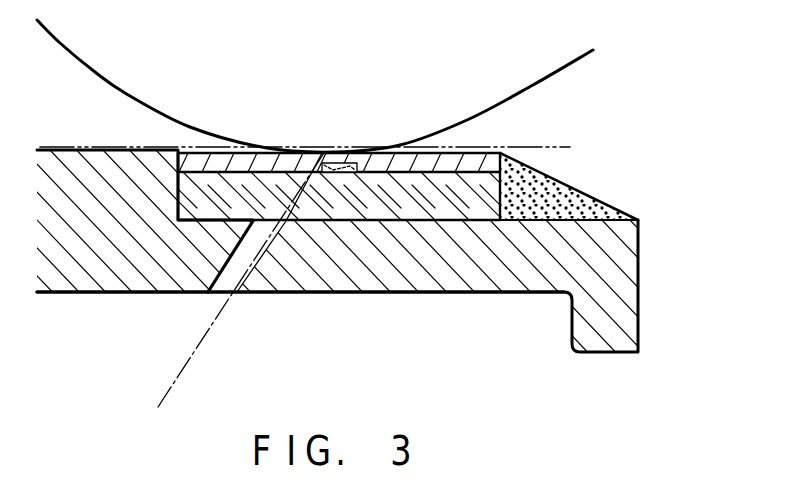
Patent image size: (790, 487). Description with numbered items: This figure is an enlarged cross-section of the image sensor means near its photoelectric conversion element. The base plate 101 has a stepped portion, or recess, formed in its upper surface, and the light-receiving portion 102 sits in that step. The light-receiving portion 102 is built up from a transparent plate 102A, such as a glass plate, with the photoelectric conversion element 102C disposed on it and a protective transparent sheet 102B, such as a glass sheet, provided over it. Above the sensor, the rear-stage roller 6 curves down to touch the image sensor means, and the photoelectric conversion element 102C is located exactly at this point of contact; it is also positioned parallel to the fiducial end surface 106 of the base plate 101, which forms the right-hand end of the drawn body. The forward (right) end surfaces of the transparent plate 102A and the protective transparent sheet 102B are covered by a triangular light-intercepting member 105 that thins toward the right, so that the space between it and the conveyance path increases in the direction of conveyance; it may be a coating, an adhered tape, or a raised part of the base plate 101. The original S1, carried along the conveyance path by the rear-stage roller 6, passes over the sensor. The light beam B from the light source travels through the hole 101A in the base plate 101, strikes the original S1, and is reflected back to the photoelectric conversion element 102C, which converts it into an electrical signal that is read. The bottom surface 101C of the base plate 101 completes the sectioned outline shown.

The rear-stage roller 6 is at (523, 72).
The original S1 is at (545, 148).
The base plate 101 is at (82, 250).
The hole 101A is at (229, 268).
The bottom surface 101C is at (148, 293).
The light-receiving portion 102 is at (508, 342).
The transparent plate 102A is at (394, 196).
The protective transparent sheet 102B is at (460, 173).
The photoelectric conversion element 102C is at (328, 174).
The light-intercepting member 105 is at (560, 192).
The fiducial end surface 106 is at (639, 296).
The light beam B is at (215, 325).